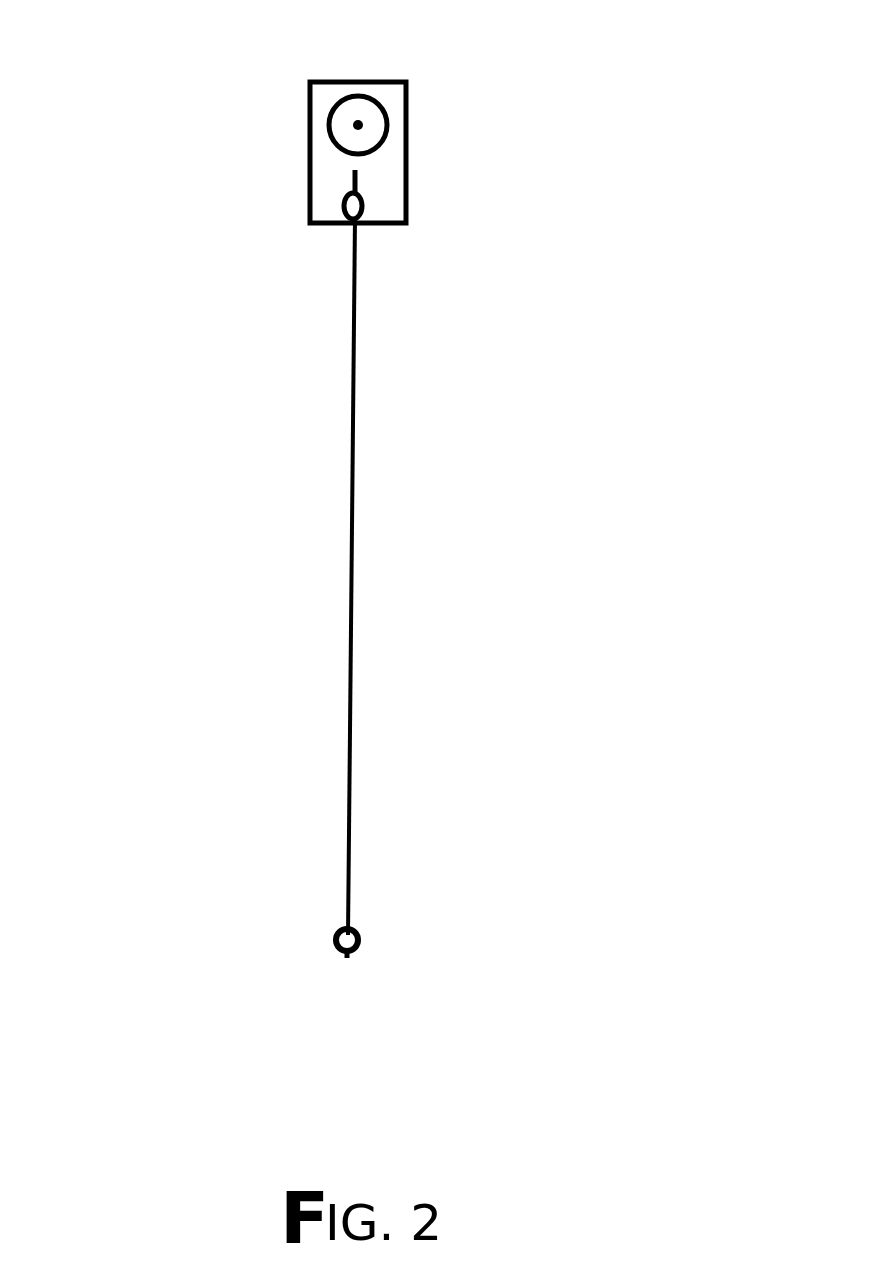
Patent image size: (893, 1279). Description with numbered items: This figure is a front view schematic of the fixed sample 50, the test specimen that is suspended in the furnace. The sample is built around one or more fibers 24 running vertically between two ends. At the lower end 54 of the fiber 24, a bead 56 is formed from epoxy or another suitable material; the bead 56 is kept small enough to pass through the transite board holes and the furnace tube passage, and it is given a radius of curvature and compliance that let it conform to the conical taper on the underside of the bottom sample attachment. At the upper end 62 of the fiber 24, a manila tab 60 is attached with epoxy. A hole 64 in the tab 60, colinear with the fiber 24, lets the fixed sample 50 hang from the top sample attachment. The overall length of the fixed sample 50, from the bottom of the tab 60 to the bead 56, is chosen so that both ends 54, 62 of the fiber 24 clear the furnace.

The fixed sample 50 is at (173, 822).
The fiber 24 is at (350, 535).
The lower end 54 is at (357, 962).
The bead 56 is at (357, 927).
The manila tab 60 is at (410, 190).
The upper end 62 is at (353, 178).
The hole 64 is at (358, 125).